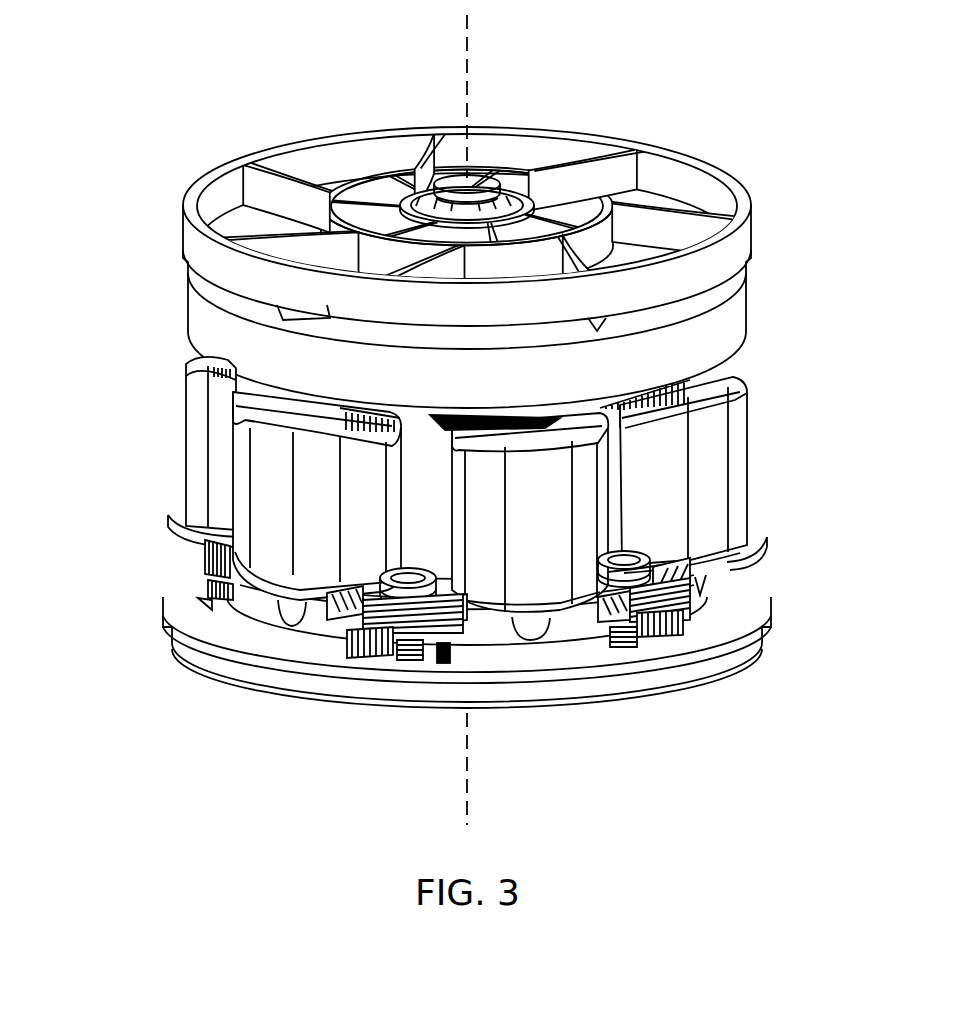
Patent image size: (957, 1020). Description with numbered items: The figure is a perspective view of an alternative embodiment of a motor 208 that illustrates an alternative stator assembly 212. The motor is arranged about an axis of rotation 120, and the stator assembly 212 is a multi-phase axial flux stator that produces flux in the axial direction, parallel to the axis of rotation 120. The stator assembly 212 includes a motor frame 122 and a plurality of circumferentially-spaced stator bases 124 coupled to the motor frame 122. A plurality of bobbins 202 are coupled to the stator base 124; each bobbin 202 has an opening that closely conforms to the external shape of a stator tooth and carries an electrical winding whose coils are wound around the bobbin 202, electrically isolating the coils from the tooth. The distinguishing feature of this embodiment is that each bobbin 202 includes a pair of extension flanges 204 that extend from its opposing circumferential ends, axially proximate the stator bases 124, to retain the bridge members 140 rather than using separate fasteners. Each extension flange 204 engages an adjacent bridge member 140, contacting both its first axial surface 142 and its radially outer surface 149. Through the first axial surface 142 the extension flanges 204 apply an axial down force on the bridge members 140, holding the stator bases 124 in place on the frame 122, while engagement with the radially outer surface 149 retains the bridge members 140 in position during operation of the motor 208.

The axis of rotation 120 is at (469, 76).
The motor 208 is at (828, 98).
The stator assembly 212 is at (858, 436).
The bobbin 202 is at (715, 493).
The motor frame 122 is at (752, 609).
The stator base 124 is at (250, 616).
The extension flange 204 is at (355, 600).
The bridge member 140 is at (330, 602).
The first axial surface 142 is at (372, 642).
The radially outer surface 149 is at (398, 640).